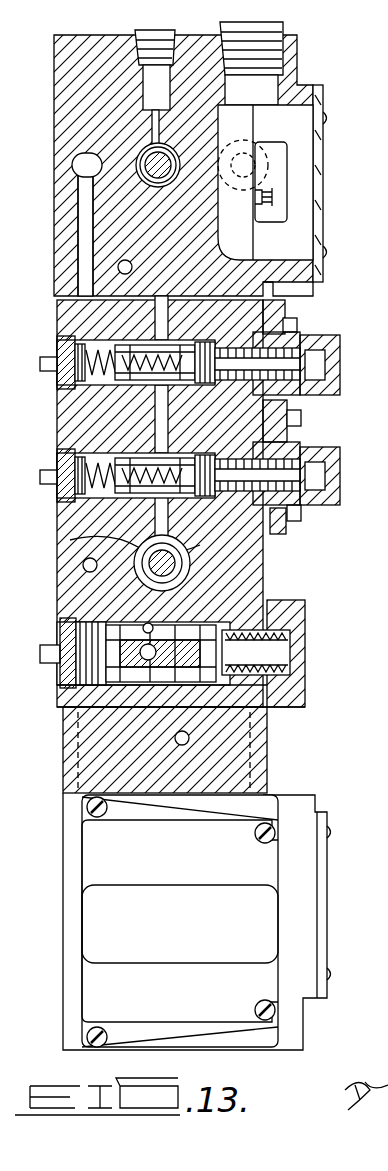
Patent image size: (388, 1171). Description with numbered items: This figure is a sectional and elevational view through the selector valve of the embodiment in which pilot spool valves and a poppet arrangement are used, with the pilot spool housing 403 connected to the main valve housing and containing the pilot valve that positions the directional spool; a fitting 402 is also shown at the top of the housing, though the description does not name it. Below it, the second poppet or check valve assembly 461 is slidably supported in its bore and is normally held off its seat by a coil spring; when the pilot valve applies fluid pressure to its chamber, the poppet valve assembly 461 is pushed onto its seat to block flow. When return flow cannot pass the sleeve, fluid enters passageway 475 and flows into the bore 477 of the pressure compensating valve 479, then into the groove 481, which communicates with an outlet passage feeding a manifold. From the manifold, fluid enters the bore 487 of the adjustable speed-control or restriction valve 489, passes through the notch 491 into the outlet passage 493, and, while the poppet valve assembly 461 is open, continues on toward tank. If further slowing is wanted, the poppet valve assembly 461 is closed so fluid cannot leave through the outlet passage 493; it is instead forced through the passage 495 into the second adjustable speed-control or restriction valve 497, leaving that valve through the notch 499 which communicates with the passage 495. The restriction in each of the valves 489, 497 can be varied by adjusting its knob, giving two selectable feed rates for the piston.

The fitting ring 402 is at (172, 158).
The pilot spool housing 403 is at (297, 47).
The second poppet or check valve assembly 461 is at (192, 565).
The passageway 475 is at (170, 625).
The bore 477 is at (178, 652).
The pressure compensating valve 479 is at (224, 630).
The groove 481 is at (192, 687).
The bore 487 is at (112, 450).
The adjustable speed-control or restriction valve 489 is at (192, 455).
The notch 491 is at (122, 542).
The outlet passage 493 is at (196, 498).
The passage 495 is at (200, 385).
The second adjustable speed-control or restriction valve 497 is at (188, 340).
The notch 499 is at (140, 345).